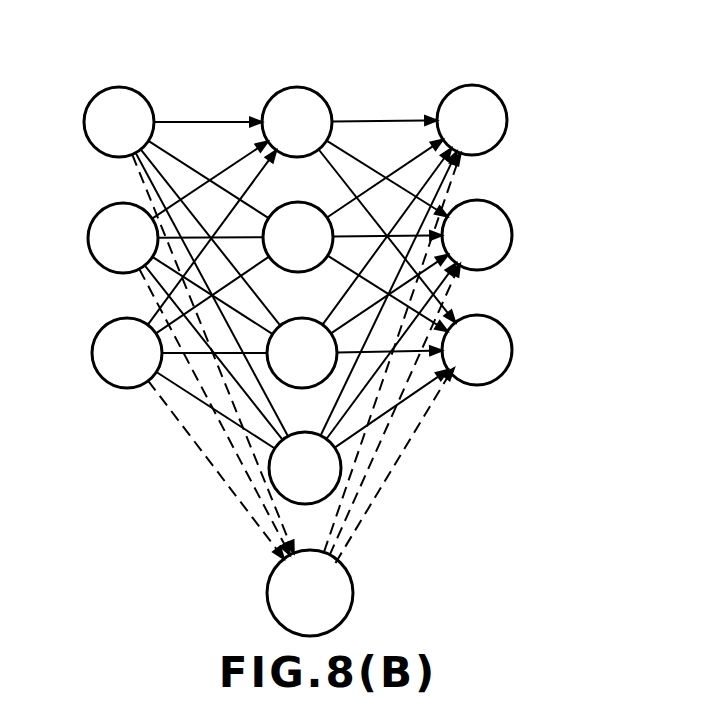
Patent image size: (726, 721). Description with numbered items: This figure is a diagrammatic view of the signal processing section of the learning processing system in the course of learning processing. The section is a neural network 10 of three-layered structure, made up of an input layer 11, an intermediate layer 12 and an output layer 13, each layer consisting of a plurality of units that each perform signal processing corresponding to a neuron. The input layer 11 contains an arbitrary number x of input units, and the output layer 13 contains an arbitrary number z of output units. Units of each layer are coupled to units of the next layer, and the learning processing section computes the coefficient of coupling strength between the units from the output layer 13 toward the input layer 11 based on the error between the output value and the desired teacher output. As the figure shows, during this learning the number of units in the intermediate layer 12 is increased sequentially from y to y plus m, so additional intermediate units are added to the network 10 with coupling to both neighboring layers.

The neural network 10 is at (560, 84).
The input layer 11 is at (68, 86).
The hidden layer 12 is at (245, 88).
The output layer 13 is at (418, 86).